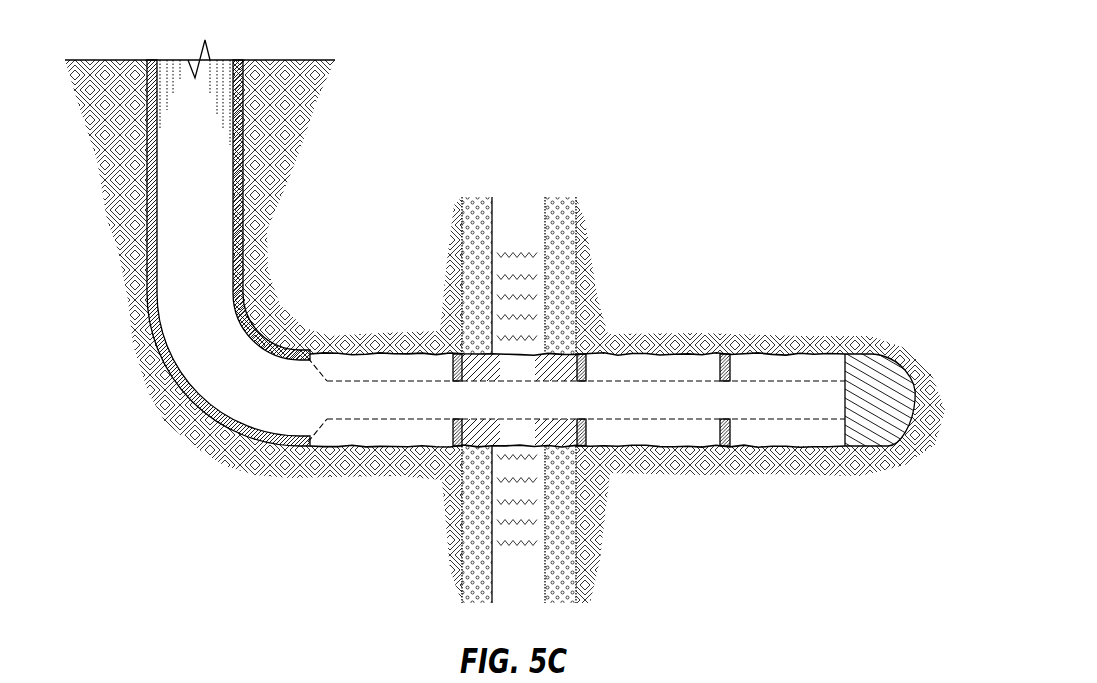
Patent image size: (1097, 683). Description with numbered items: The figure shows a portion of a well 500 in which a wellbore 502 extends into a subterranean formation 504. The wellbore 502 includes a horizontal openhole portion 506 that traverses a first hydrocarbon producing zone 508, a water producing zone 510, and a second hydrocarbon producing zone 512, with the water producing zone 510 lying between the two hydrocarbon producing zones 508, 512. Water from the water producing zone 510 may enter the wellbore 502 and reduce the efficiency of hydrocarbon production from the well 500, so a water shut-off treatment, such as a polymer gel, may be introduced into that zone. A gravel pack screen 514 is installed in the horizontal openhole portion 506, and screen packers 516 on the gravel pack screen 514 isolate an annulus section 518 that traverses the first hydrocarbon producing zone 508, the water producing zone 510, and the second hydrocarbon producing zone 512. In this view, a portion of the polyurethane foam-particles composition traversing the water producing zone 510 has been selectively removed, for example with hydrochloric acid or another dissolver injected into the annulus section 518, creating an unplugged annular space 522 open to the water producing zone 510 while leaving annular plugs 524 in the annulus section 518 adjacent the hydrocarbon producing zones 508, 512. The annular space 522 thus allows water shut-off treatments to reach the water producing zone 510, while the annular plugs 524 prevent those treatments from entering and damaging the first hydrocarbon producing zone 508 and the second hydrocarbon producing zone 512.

The portion of a well 500 is at (746, 52).
The wellbore 502 is at (190, 98).
The subterranean formation 504 is at (297, 133).
The horizontal openhole portion 506 is at (331, 348).
The first hydrocarbon producing zone 508 is at (478, 210).
The water producing zone 510 is at (517, 586).
The second hydrocarbon producing zone 512 is at (562, 210).
The gravel pack screen 514 is at (780, 381).
The screen packer 516 is at (565, 447).
The annulus section 518 is at (520, 353).
The annular space 522 is at (491, 353).
The annular plug 524 is at (481, 353).